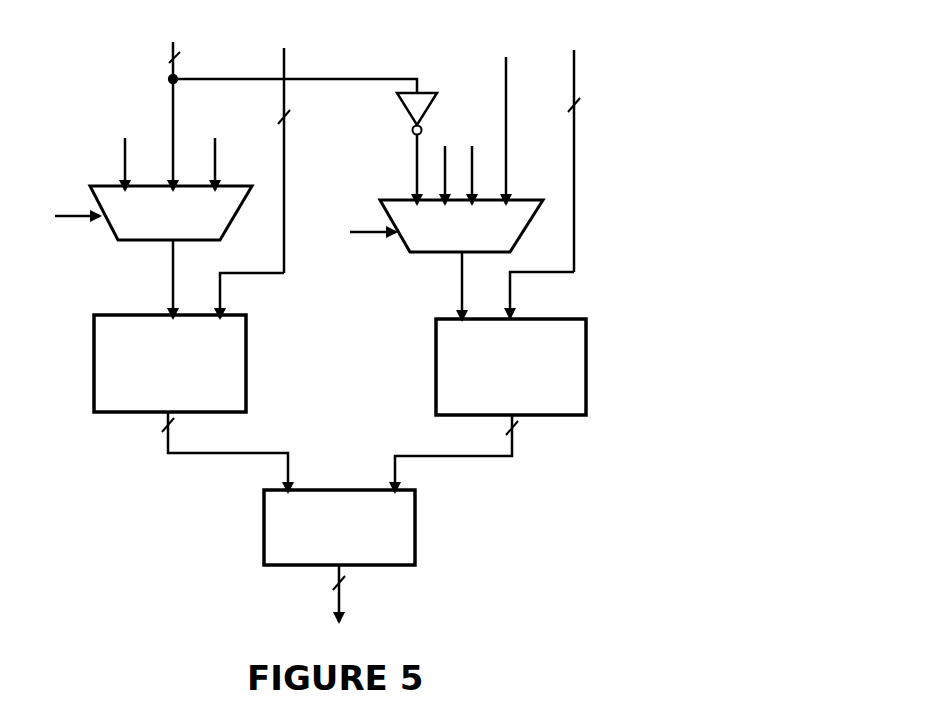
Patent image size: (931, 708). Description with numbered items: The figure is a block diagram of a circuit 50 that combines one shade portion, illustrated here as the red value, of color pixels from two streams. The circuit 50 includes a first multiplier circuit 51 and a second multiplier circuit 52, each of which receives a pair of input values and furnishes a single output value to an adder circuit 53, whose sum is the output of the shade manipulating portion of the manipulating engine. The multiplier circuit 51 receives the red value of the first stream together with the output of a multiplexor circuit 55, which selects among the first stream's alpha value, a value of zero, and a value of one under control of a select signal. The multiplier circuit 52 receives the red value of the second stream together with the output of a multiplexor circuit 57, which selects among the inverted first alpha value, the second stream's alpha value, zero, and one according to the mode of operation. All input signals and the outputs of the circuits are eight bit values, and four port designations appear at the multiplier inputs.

The circuit 50 is at (360, 357).
The first multiplier circuit 51 is at (170, 363).
The second multiplier circuit 52 is at (511, 367).
The adder circuit 53 is at (339, 527).
The multiplexor circuit 55 is at (222, 230).
The multiplexor circuit 57 is at (508, 242).